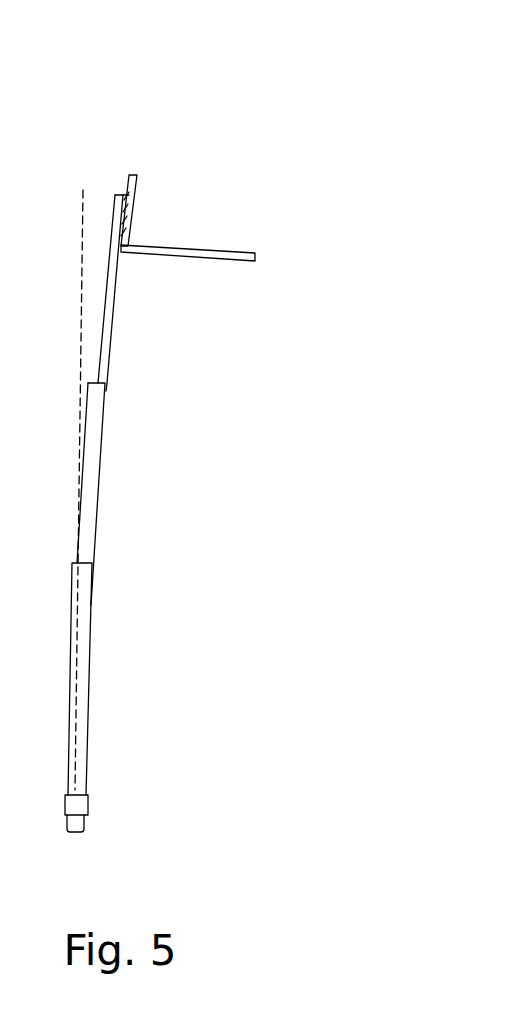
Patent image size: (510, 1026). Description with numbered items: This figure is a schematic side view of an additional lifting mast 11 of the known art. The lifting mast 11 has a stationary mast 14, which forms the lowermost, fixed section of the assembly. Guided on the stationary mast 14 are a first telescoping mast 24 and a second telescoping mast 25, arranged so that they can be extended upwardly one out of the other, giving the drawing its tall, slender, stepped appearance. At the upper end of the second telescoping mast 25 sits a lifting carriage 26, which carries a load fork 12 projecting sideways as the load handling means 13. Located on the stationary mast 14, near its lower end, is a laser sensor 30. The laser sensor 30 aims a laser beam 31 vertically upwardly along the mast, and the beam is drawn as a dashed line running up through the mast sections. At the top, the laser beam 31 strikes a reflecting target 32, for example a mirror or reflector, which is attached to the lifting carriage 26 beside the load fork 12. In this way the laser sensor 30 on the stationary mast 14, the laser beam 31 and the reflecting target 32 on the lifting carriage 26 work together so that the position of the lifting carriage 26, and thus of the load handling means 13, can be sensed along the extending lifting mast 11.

The lifting mast 11 is at (197, 152).
The load fork 12 is at (195, 230).
The load handling means 13 is at (226, 251).
The stationary mast 14 is at (87, 732).
The first telescoping mast 24 is at (100, 492).
The second telescoping mast 25 is at (114, 312).
The lifting carriage 26 is at (136, 197).
The laser sensor 30 is at (72, 804).
The laser beam 31 is at (81, 365).
The reflecting target 32 is at (130, 176).